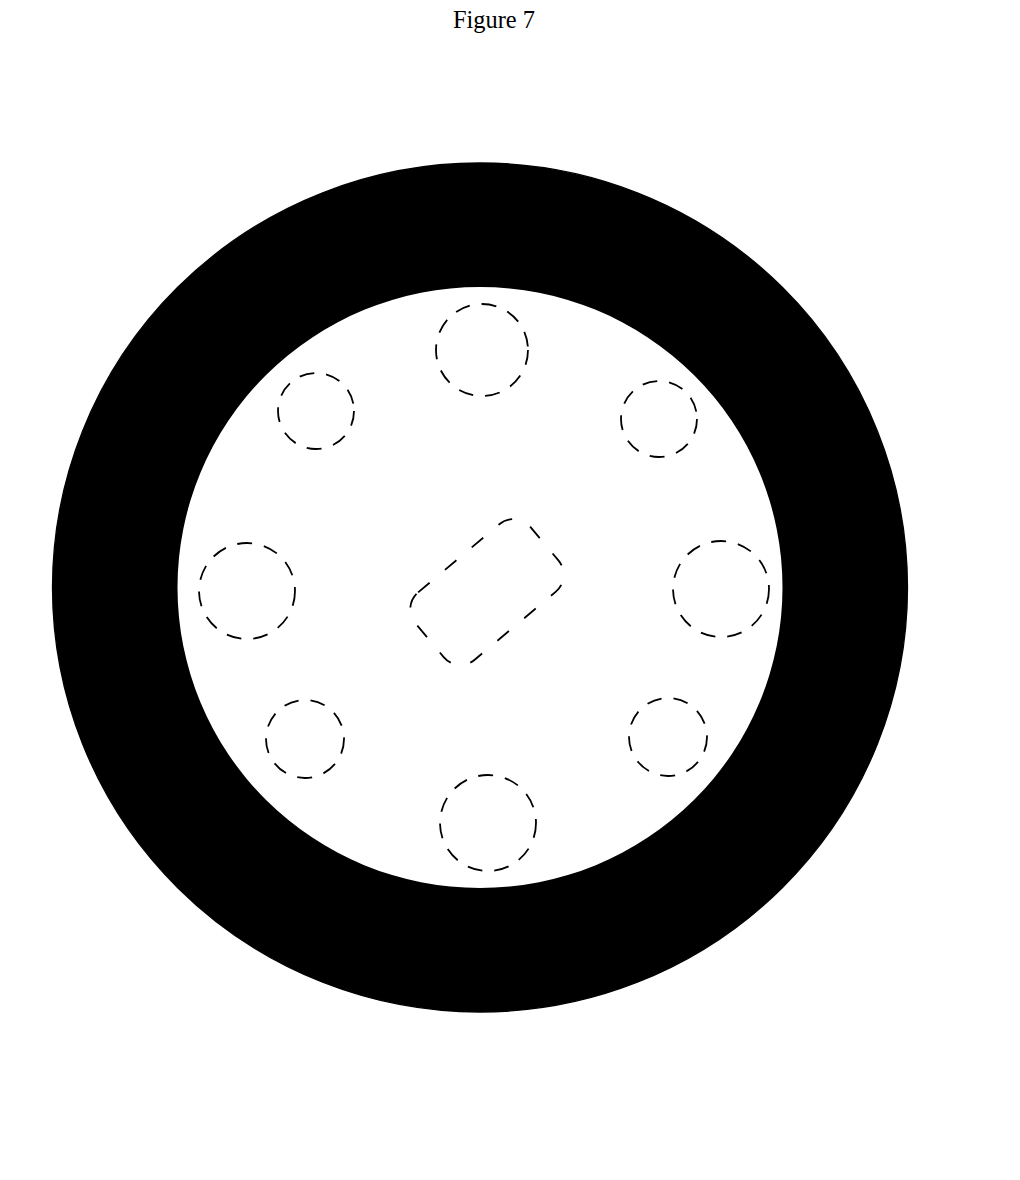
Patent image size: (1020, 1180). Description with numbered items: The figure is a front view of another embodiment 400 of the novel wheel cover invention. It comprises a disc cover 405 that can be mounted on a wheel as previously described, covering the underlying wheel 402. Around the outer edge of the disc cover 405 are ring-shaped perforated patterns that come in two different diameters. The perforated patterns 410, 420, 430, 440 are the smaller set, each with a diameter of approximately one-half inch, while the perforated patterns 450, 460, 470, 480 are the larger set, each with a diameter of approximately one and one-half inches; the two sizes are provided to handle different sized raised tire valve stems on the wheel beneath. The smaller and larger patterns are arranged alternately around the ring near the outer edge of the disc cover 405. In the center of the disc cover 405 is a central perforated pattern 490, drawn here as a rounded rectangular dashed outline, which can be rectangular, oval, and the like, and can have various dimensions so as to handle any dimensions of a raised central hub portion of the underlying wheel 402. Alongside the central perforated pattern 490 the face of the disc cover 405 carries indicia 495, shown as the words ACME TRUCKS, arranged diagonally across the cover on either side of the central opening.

The wheel cover embodiment 400 is at (212, 218).
The underlying wheel 402 is at (439, 163).
The disc cover 405 is at (123, 830).
The perforated pattern 410 is at (337, 377).
The perforated pattern 420 is at (629, 419).
The perforated pattern 430 is at (682, 700).
The perforated pattern 440 is at (307, 702).
The perforated pattern 450 is at (260, 547).
The perforated pattern 460 is at (514, 350).
The perforated pattern 470 is at (721, 569).
The perforated pattern 480 is at (510, 778).
The central hub opening 490 is at (520, 512).
The logo indicia 495 is at (489, 616).